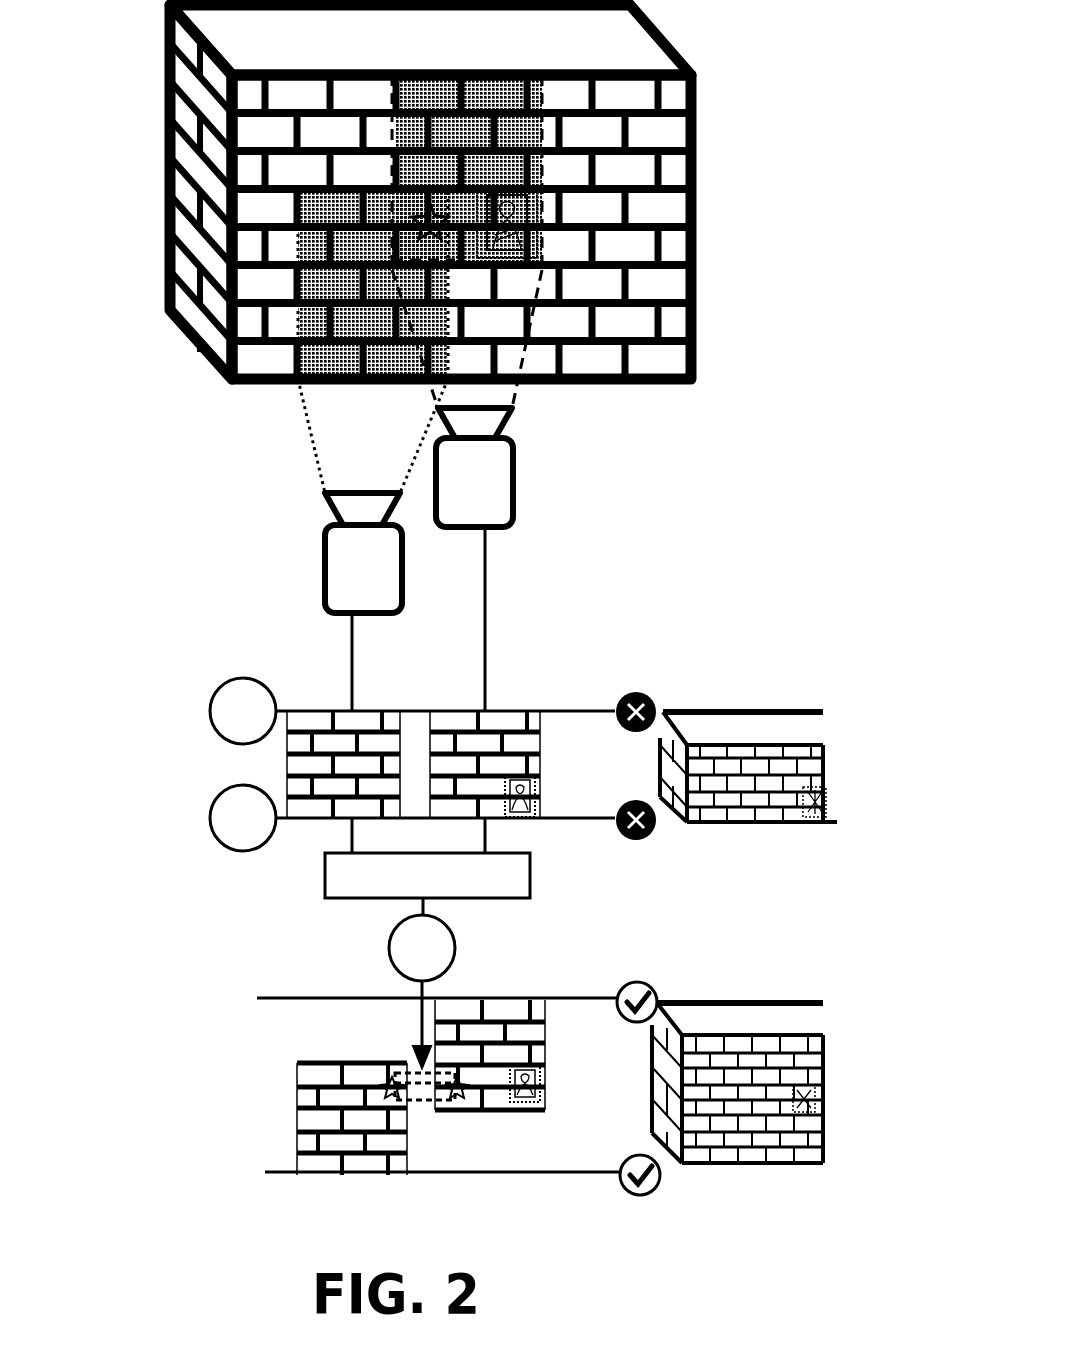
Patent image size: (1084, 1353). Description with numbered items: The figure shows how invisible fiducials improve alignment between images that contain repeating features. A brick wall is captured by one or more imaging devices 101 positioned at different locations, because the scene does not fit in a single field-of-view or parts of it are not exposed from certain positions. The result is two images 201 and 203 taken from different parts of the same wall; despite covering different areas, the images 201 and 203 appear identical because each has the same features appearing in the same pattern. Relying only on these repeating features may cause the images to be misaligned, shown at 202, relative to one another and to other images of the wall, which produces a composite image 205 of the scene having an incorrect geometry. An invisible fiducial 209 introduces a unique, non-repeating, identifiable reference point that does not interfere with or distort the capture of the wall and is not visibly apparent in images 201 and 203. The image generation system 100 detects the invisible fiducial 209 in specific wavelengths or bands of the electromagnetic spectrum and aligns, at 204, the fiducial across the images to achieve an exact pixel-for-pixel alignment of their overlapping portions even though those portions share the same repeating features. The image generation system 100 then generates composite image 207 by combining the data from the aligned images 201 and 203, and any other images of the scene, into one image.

The image generation system 100 is at (427, 858).
The imaging device 101 is at (419, 559).
The image 201 is at (298, 320).
The misalignment 202 is at (243, 764).
The image 203 is at (462, 72).
The alignment 204 is at (422, 983).
The composite image 205 is at (705, 712).
The composite image 207 is at (710, 1003).
The invisible fiducial 209 is at (440, 222).